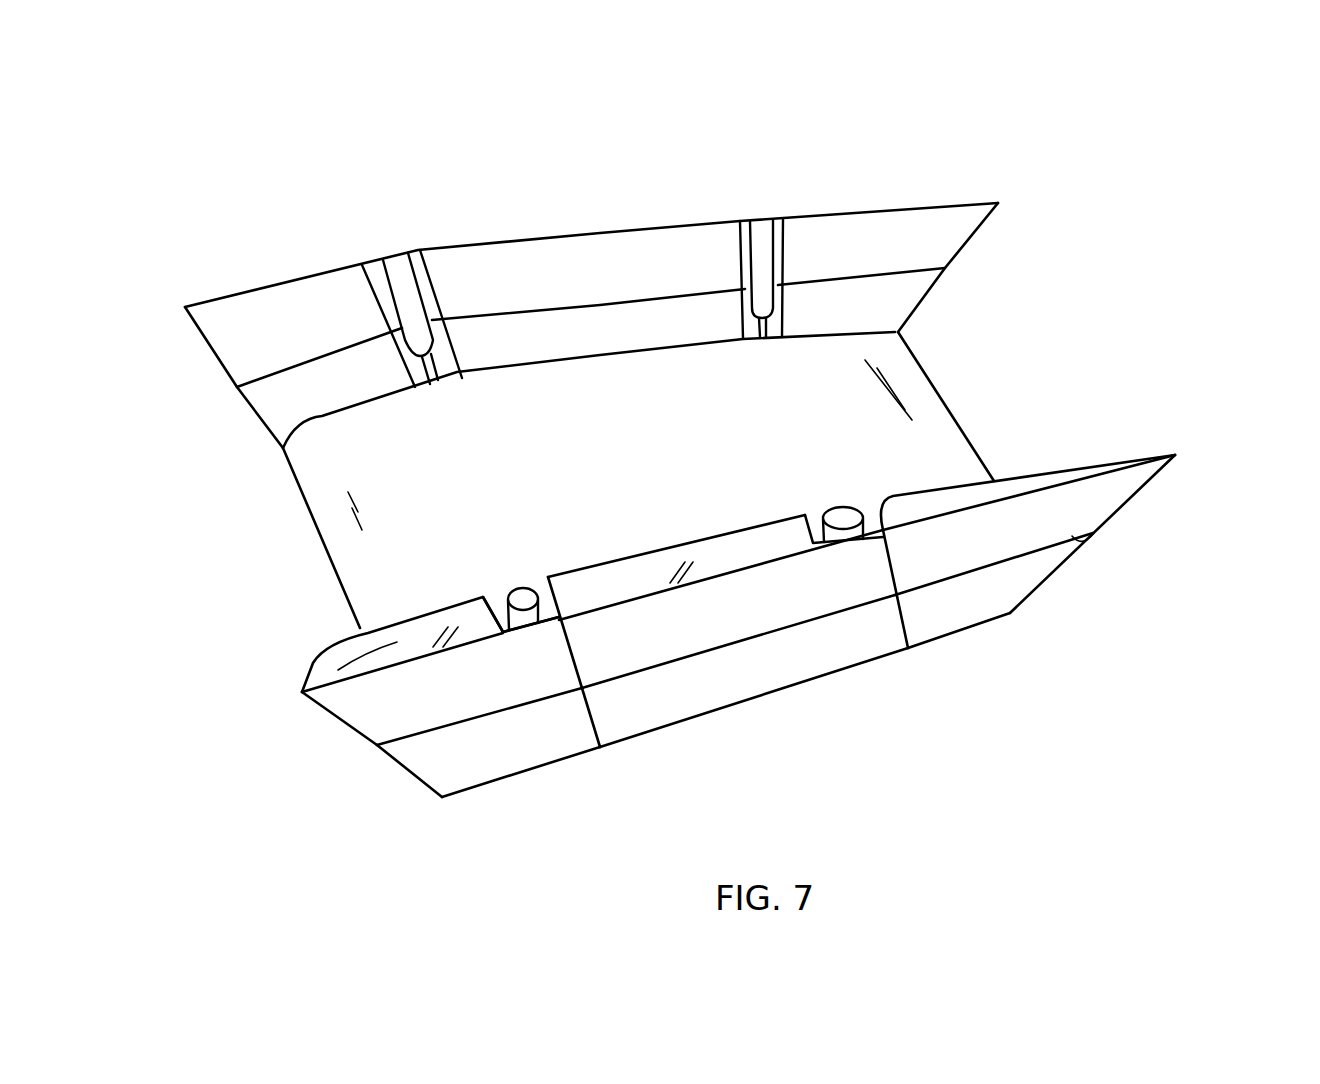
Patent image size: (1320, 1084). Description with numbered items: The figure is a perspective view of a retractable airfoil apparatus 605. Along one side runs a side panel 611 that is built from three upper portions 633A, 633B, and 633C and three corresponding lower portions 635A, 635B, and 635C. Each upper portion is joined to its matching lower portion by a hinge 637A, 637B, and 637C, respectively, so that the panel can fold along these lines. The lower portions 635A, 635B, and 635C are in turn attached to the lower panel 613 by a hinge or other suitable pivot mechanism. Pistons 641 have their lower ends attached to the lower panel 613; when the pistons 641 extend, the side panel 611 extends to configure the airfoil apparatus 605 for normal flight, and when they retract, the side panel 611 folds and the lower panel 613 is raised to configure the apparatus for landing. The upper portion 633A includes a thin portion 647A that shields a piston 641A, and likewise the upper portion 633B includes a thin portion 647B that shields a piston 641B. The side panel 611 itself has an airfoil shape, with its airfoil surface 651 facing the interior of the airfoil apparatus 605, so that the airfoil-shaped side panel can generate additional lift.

The retractable airfoil apparatus 605 is at (1085, 210).
The side panel 611 is at (860, 690).
The lower panel 613 is at (622, 471).
The upper portion 633A is at (317, 662).
The upper portion 633B is at (610, 593).
The upper portion 633C is at (1080, 470).
The lower portion 635A is at (513, 762).
The lower portion 635B is at (680, 697).
The lower portion 635C is at (998, 602).
The hinge 637A is at (423, 733).
The hinge 637B is at (730, 640).
The hinge 637C is at (1085, 536).
The piston 641 is at (433, 381).
The piston 641A is at (522, 588).
The piston 641B is at (843, 507).
The thin portion 647A is at (528, 628).
The thin portion 647B is at (837, 548).
The airfoil surface 651 is at (390, 618).